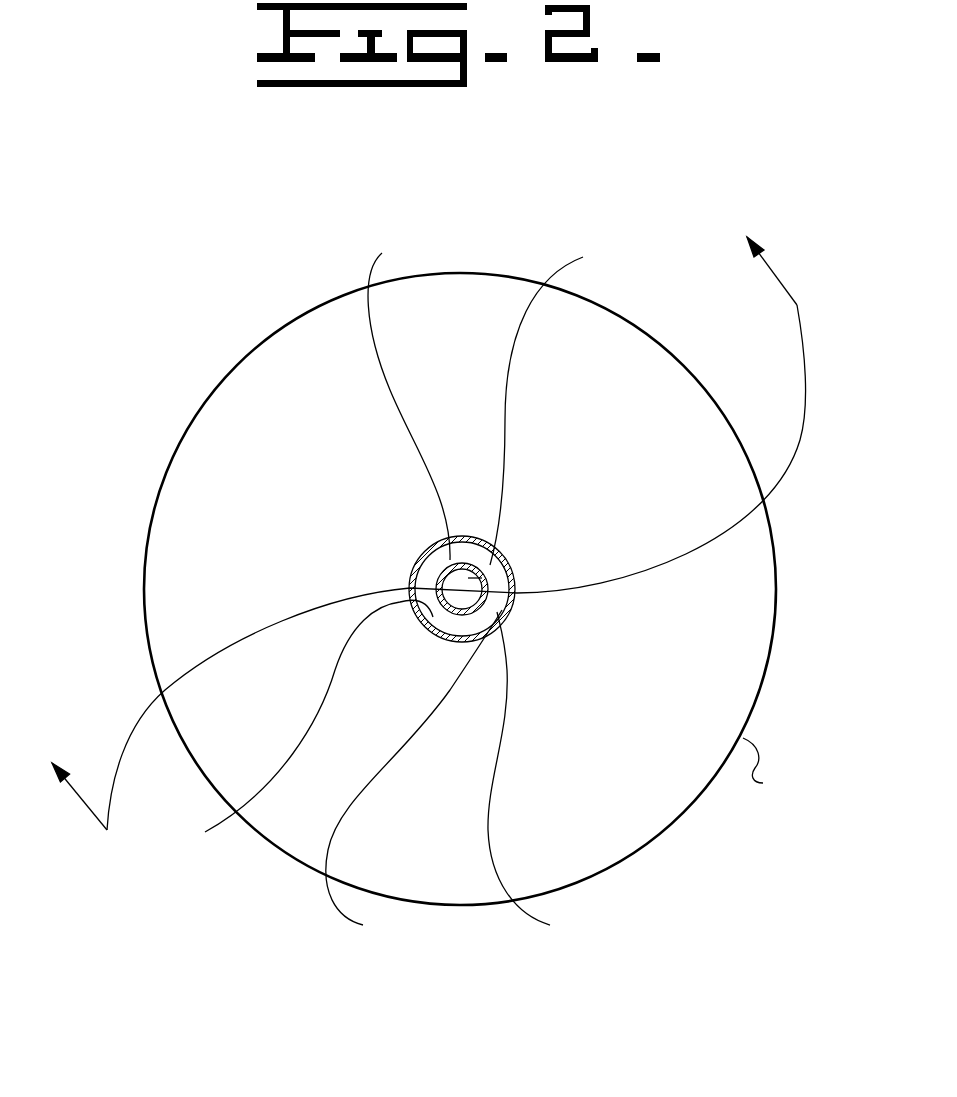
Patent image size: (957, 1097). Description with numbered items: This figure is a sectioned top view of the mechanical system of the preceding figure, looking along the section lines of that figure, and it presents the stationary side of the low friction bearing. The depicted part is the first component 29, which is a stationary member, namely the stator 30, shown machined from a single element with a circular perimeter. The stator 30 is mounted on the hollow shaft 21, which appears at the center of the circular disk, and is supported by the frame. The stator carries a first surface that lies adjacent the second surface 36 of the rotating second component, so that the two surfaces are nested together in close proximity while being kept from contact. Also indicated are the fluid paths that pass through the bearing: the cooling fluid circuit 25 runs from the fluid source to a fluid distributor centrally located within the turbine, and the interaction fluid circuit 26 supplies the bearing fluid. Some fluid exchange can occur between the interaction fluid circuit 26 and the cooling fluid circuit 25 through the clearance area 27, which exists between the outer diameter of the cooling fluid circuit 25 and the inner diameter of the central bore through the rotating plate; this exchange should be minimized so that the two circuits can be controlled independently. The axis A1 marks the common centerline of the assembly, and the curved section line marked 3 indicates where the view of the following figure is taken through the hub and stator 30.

The hollow shaft 21 is at (410, 570).
The cooling fluid circuit 25 is at (557, 403).
The interaction fluid circuit 26 is at (299, 730).
The clearance area 27 is at (409, 396).
The first component 29 is at (190, 424).
The stator 30 is at (775, 769).
The second surface 36 is at (541, 779).
The axis A1 is at (414, 780).
The section line 3- 3 is at (419, 523).